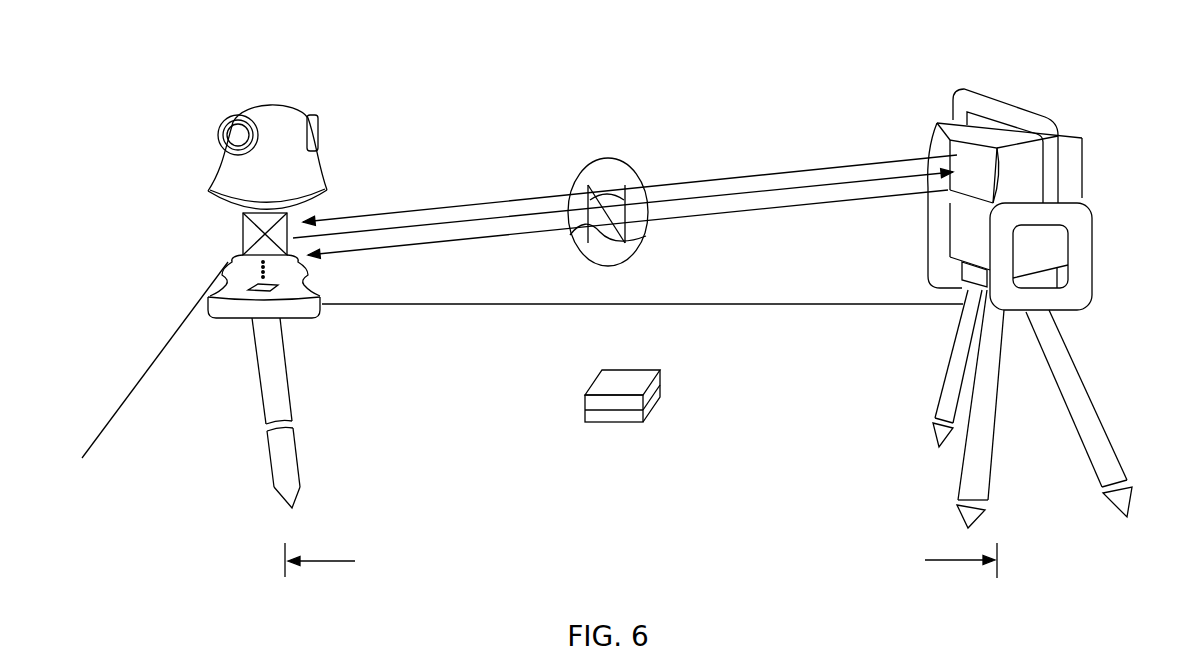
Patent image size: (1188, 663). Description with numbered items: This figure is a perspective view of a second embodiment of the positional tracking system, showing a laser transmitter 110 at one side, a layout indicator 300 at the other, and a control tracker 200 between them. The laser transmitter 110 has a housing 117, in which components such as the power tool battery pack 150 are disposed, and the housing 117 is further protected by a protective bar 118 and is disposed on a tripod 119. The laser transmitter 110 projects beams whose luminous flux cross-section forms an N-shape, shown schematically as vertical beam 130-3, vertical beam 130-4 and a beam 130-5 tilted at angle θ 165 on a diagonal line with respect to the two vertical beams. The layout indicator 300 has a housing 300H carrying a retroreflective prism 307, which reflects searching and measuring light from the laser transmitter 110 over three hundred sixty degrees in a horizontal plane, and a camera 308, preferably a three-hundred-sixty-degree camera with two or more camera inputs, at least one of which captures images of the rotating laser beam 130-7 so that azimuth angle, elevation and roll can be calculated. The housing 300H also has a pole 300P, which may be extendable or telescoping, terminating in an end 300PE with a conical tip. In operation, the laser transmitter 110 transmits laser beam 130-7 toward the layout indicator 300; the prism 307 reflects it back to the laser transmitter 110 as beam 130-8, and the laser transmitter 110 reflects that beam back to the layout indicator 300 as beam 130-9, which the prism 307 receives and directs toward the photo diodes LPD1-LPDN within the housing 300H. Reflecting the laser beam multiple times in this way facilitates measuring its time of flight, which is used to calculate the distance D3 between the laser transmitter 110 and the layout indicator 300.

The layout indicator 300 is at (178, 245).
The camera 308 is at (290, 117).
The retroreflective prism 307 is at (313, 219).
The housing 300H is at (213, 282).
The photo diodes LPD1-LPDN is at (258, 288).
The pole 300P is at (278, 373).
The end 300PE is at (293, 508).
The distance D3 is at (641, 560).
The laser beam 130-7 is at (725, 177).
The beam 130-8 is at (807, 186).
The beam 130-9 is at (773, 207).
The angle θ 165 is at (598, 198).
The vertical beam 130-3 is at (643, 233).
The vertical beam 130-4 is at (571, 233).
The tilted beam 130-5 is at (607, 242).
The control tracker 200 is at (592, 433).
The laser transmitter 110 is at (1099, 218).
The housing 117 is at (1077, 155).
The protective bar 118 is at (1023, 118).
The power tool battery pack 150 is at (972, 275).
The tripod 119 is at (1067, 358).